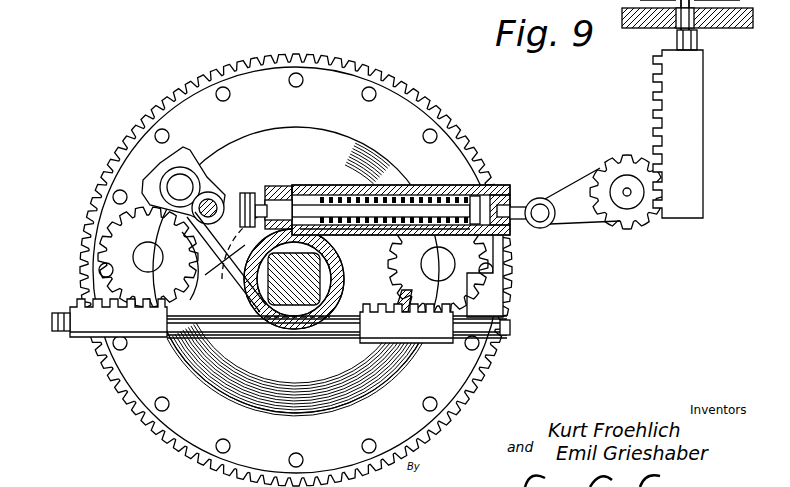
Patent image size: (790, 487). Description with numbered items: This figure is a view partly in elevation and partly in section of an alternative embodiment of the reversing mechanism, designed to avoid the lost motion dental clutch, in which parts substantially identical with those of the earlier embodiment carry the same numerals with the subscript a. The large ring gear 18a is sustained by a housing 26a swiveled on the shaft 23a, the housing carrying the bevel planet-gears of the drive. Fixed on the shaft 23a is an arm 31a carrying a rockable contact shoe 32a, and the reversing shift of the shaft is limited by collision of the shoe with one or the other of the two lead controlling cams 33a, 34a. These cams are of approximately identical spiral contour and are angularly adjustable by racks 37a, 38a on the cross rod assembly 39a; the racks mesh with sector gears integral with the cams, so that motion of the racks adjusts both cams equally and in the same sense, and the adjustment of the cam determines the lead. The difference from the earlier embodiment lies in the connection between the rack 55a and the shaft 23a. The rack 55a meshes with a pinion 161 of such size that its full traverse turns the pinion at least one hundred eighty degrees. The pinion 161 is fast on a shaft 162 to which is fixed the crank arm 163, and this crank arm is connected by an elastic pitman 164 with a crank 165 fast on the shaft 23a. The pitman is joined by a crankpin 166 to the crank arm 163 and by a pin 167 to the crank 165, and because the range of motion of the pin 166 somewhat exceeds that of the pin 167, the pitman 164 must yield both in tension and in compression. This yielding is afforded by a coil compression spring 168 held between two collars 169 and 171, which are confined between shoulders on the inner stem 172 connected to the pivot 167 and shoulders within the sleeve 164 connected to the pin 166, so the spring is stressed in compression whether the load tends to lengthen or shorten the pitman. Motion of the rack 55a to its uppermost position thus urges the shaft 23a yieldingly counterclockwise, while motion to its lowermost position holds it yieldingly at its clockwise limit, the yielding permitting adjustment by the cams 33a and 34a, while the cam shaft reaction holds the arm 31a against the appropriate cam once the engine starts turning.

The ring gear 18a is at (168, 110).
The housing 26a is at (284, 145).
The shaft 23a is at (315, 278).
The contact shoe 32a is at (195, 157).
The pin 167 is at (193, 212).
The crank 165 is at (232, 250).
The arm 31a is at (162, 255).
The lead controlling cam 34a is at (497, 258).
The elastic pitman 164 is at (412, 185).
The coil compression spring 168 is at (330, 195).
The collar 171 is at (450, 188).
The collar 169 is at (352, 228).
The inner stem 172 is at (285, 200).
The crankpin 166 is at (540, 198).
The crank arm 163 is at (578, 222).
The shaft 162 is at (630, 205).
The pinion 161 is at (606, 162).
The rack 55a is at (692, 140).
The lead controlling cam 33a is at (200, 318).
The cross rod assembly 39a is at (505, 335).
The rack 37a is at (145, 338).
The rack 38a is at (428, 343).